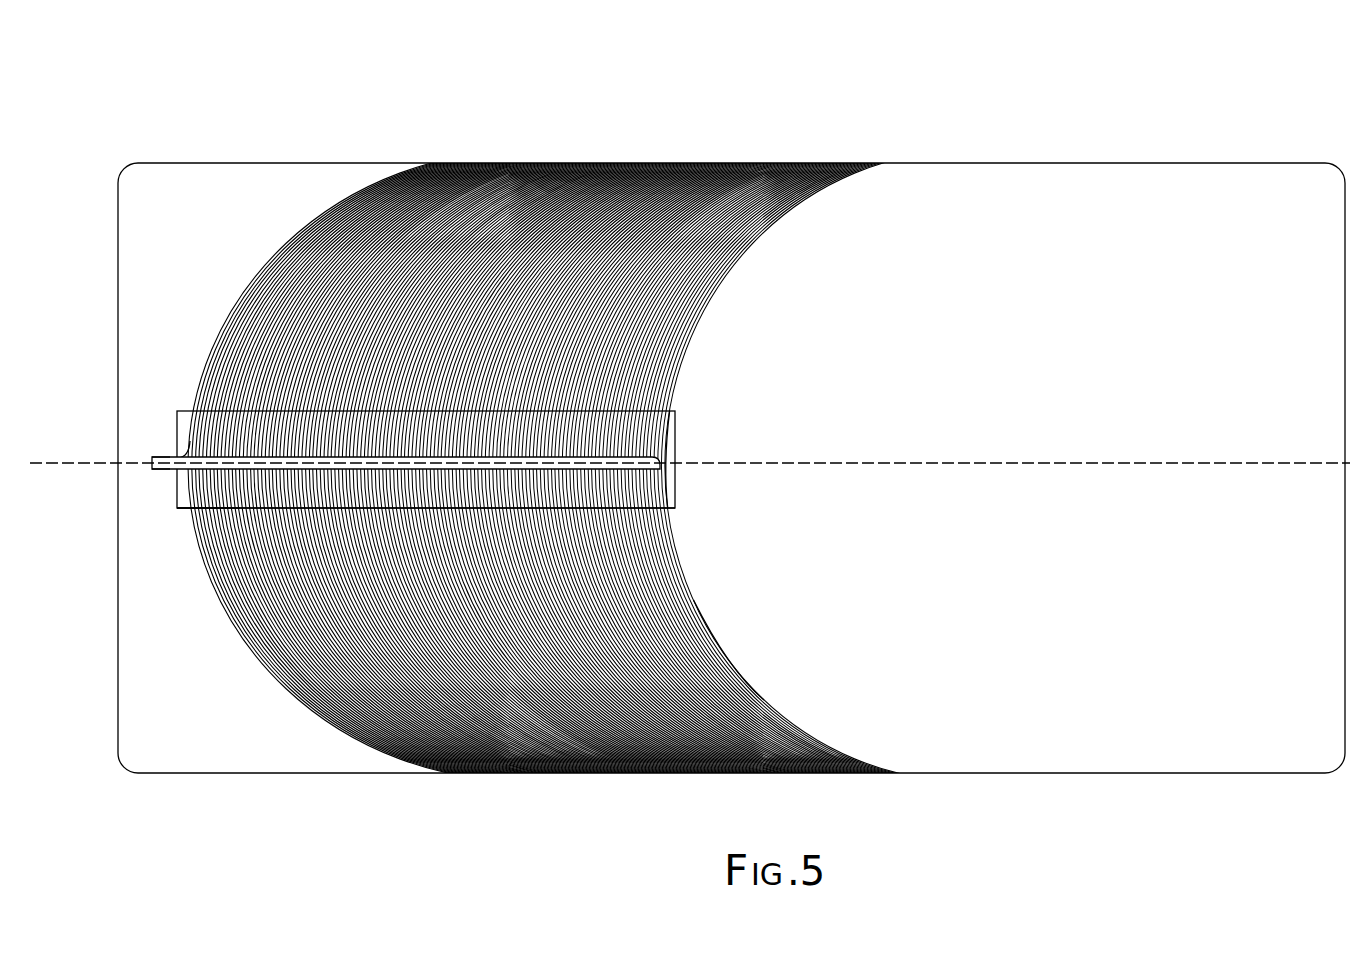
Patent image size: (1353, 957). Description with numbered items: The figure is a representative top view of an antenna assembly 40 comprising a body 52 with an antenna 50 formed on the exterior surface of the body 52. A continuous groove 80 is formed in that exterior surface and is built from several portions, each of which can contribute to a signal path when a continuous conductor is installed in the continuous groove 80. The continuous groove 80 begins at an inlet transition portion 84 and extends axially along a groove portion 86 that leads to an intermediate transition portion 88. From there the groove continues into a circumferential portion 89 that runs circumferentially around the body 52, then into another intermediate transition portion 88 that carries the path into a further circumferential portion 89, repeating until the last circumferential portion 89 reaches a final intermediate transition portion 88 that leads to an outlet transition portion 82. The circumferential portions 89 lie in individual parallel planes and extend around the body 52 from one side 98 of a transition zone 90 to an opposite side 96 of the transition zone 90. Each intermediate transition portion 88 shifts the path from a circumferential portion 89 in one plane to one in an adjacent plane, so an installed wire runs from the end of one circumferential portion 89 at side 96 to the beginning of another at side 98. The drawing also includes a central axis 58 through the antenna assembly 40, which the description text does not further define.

The antenna assembly 40 is at (1097, 122).
The antenna 50 is at (643, 148).
The body 52 is at (988, 362).
The central axis 58 is at (233, 465).
The continuous groove 80 is at (427, 332).
The outlet transition portion 82 is at (152, 456).
The inlet transition portion 84 is at (152, 470).
The groove portion 86 is at (625, 472).
The intermediate transition portion 88 is at (647, 437).
The circumferential portion 89 is at (742, 664).
The transition zone 90 is at (222, 507).
The side of transition zone 96 is at (445, 409).
The side of transition zone 98 is at (362, 510).